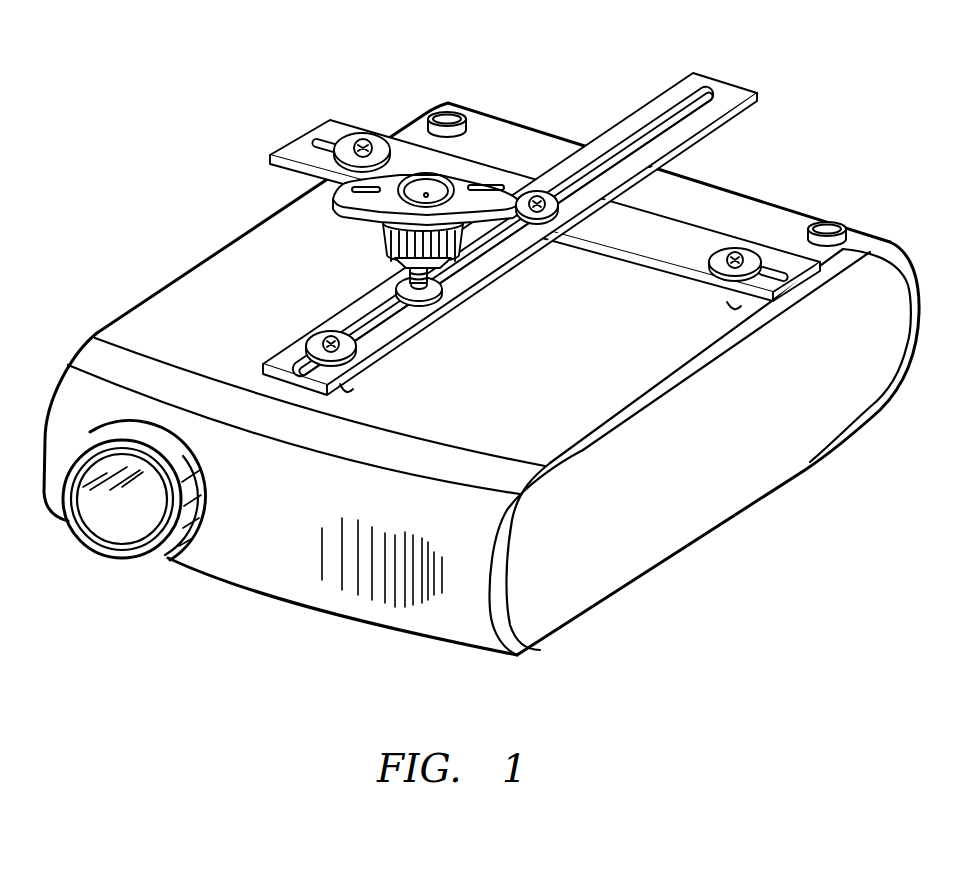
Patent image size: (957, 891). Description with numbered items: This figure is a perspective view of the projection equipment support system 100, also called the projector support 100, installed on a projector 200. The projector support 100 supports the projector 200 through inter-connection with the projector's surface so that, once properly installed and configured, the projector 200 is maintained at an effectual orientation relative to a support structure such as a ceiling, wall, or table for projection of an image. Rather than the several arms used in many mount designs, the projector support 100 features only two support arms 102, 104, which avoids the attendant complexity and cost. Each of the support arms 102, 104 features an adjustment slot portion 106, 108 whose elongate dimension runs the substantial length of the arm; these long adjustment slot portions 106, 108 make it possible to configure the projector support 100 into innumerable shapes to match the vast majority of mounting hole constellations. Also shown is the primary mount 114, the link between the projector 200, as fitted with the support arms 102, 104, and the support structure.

The projection equipment support system 100 is at (539, 198).
The support arm 102 is at (545, 228).
The support arm 104 is at (528, 218).
The adjustment slot portion 106 is at (686, 216).
The adjustment slot portion 108 is at (656, 133).
The primary mount 114 is at (372, 237).
The projector 200 is at (731, 462).